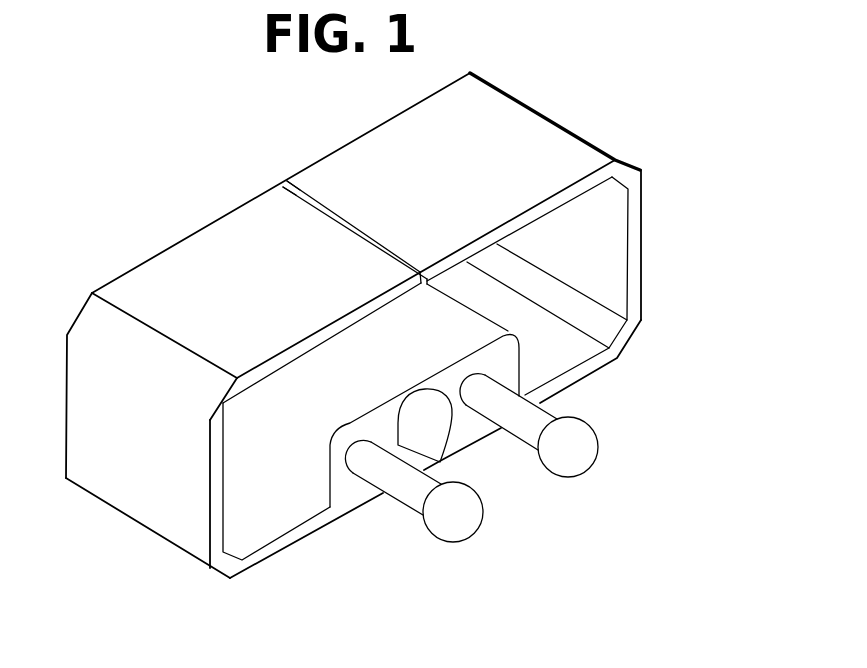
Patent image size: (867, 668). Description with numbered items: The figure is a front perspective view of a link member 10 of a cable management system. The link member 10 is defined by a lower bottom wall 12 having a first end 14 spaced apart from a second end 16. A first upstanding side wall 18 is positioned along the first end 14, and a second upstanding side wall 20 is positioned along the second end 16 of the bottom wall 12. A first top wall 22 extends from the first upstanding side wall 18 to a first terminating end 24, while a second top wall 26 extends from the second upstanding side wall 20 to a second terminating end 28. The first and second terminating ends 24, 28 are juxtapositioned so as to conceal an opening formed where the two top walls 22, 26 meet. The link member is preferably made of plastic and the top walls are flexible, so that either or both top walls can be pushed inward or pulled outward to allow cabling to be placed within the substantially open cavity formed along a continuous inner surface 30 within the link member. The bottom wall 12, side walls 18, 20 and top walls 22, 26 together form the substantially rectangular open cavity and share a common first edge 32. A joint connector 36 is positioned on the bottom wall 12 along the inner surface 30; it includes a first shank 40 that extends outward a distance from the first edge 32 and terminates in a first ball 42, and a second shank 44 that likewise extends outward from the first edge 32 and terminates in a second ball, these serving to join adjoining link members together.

The link member 10 is at (676, 134).
The bottom wall 12 is at (287, 548).
The first end 14 is at (232, 571).
The second end 16 is at (632, 345).
The first upstanding side wall 18 is at (133, 472).
The second upstanding side wall 20 is at (643, 240).
The first top wall 22 is at (278, 197).
The first terminating end 24 is at (289, 176).
The second top wall 26 is at (462, 116).
The second terminating end 28 is at (300, 184).
The inner surface 30 is at (570, 247).
The first edge 32 is at (233, 389).
The joint connector 36 is at (400, 345).
The first shank 40 is at (383, 494).
The first ball 42 is at (473, 522).
The second shank 44 is at (582, 463).